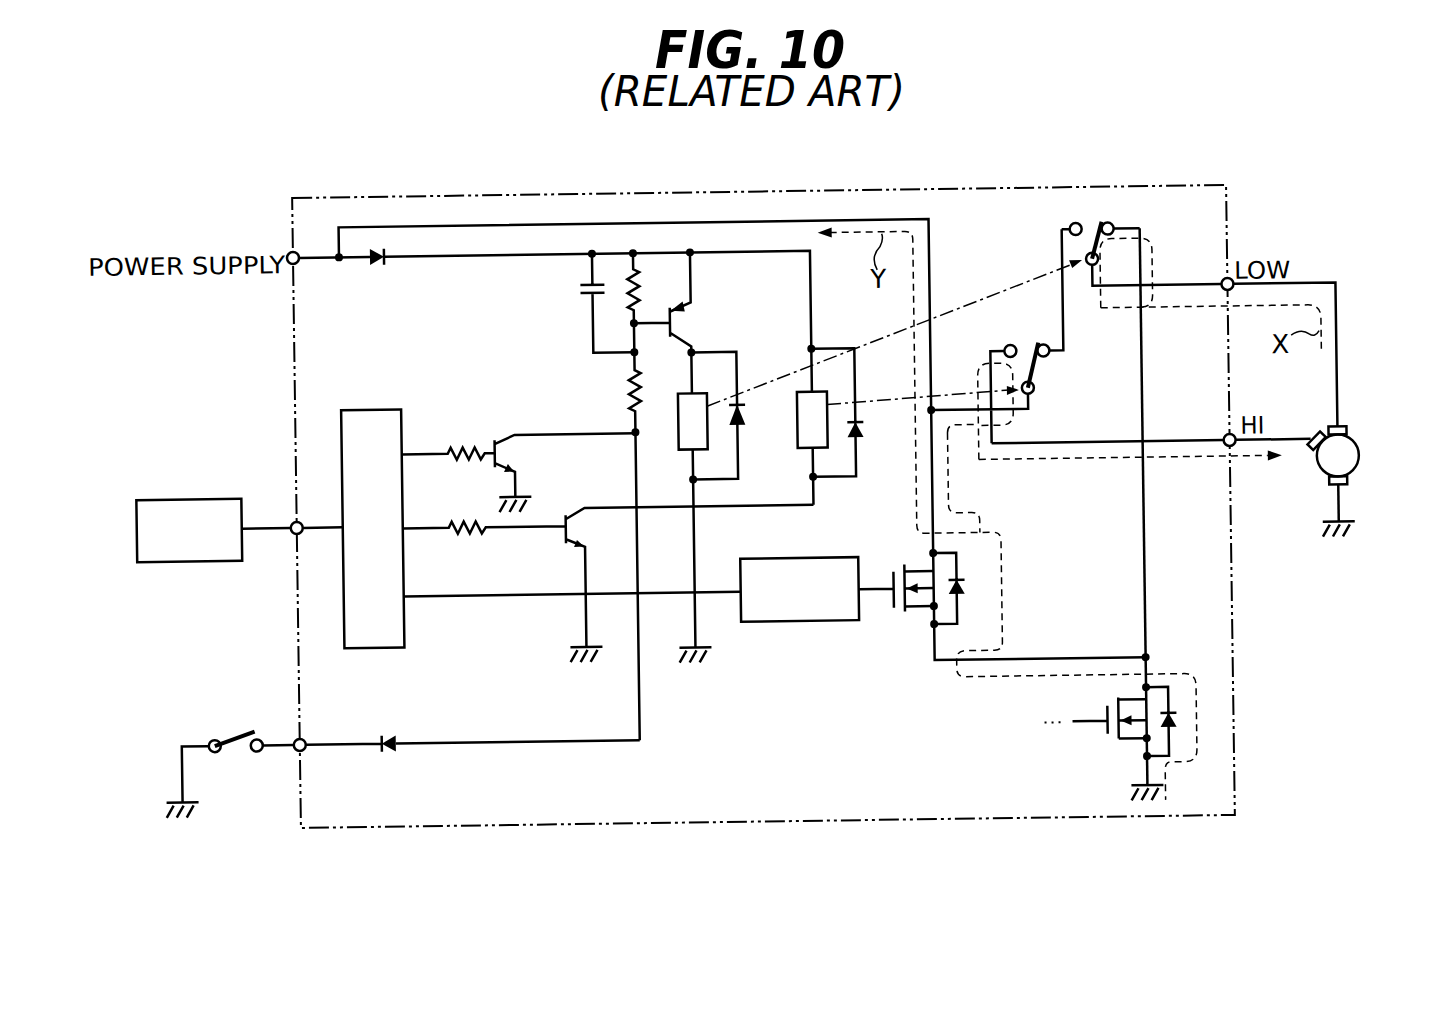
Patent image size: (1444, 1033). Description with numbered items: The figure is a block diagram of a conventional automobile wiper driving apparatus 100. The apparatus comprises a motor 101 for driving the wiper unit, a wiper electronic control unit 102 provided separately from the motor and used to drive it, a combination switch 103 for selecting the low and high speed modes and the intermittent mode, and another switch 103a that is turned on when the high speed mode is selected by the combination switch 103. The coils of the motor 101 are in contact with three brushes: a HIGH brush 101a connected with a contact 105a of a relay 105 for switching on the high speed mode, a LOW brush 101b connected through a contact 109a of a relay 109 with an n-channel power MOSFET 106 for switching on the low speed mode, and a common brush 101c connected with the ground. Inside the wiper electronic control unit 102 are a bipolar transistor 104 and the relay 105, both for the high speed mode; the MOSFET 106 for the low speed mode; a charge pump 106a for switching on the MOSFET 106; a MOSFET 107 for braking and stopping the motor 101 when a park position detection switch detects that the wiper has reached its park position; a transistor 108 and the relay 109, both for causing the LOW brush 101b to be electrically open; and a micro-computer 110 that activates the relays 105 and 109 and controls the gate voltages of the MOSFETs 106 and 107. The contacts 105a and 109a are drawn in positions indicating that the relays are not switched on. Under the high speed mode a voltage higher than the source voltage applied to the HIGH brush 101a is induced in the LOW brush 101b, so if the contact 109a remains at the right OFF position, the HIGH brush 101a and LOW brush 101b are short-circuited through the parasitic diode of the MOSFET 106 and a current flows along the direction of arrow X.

The wiper driving apparatus 100 is at (1368, 204).
The motor 101 is at (1357, 470).
The HIGH brush 101a is at (1308, 470).
The LOW brush 101b is at (1336, 441).
The common brush 101c is at (1345, 495).
The wiper electronic control unit 102 is at (440, 200).
The combination switch 103 is at (170, 498).
The high-speed switch 103a is at (236, 750).
The bipolar transistor 104 is at (562, 519).
The relay 105 is at (808, 456).
The relay contact 105a is at (1040, 388).
The MOSFET 106 is at (893, 622).
The charge pump 106a is at (770, 631).
The MOSFET 107 is at (1105, 747).
The transistor 108 is at (491, 445).
The relay 109 is at (688, 456).
The relay contact 109a is at (1062, 256).
The micro-computer 110 is at (366, 650).